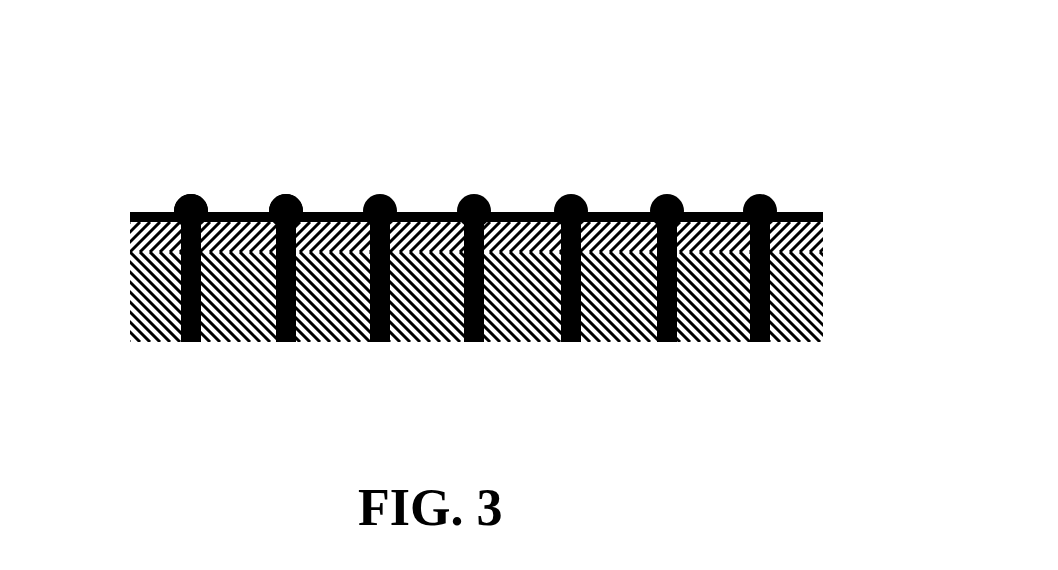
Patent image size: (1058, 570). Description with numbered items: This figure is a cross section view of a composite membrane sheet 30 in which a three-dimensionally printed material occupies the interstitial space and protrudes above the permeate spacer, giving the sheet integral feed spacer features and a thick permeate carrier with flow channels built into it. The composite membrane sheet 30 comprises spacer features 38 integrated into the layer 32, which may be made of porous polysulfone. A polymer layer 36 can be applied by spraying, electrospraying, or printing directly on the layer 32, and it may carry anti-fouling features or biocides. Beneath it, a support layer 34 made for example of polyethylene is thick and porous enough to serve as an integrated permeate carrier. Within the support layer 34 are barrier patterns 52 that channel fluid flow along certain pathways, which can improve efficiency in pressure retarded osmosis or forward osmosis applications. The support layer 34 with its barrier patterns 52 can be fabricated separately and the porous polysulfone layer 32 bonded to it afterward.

The composite membrane sheet 30 is at (306, 105).
The layer 32 is at (805, 233).
The support layer 34 is at (312, 298).
The polymer layer 36 is at (283, 207).
The spacer features 38 is at (462, 210).
The barrier patterns 52 is at (176, 243).